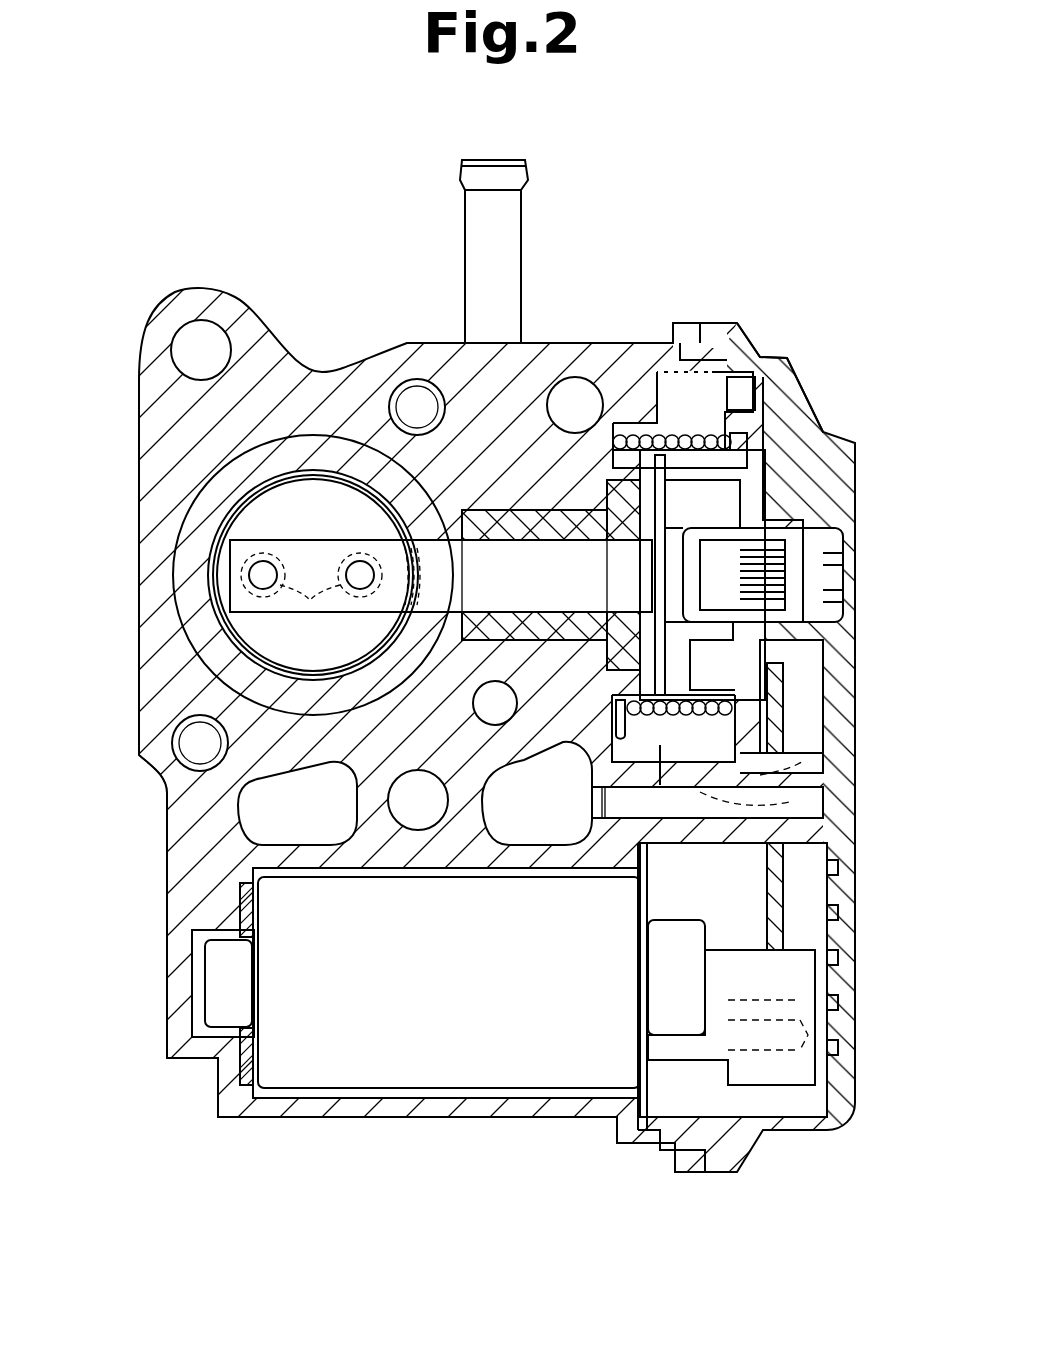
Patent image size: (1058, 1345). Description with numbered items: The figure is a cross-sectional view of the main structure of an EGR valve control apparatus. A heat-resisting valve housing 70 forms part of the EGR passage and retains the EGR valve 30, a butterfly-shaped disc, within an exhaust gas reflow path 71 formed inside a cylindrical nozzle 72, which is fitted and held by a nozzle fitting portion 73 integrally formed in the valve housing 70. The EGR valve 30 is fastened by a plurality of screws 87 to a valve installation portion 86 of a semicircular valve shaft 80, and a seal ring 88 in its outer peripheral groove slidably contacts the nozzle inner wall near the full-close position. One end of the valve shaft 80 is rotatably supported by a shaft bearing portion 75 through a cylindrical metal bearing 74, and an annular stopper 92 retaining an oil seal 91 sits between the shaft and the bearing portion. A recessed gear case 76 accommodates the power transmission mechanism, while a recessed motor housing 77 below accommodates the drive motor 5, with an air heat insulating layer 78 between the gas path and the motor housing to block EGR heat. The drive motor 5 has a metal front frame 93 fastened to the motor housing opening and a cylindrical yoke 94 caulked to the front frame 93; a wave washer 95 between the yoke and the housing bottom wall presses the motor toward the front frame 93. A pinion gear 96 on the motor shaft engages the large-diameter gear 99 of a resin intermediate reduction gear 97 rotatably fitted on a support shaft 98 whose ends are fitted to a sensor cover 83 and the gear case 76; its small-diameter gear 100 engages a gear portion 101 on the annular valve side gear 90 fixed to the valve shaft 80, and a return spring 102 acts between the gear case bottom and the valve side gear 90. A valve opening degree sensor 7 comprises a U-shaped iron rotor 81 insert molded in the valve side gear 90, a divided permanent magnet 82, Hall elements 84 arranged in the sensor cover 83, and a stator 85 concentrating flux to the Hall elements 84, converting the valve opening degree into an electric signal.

The valve housing 70 is at (320, 382).
The exhaust gas reflow path 71 is at (210, 472).
The cylindrical nozzle 72 is at (203, 528).
The nozzle fitting portion 73 is at (273, 733).
The metal bearing 74 is at (505, 548).
The shaft bearing portion 75 is at (565, 480).
The gear case 76 is at (738, 388).
The motor housing 77 is at (553, 1119).
The heat insulating layer 78 is at (320, 826).
The valve shaft 80 is at (538, 522).
The rotor 81 is at (745, 648).
The permanent magnet 82 is at (733, 630).
The sensor cover 83 is at (823, 443).
The Hall elements 84 is at (755, 540).
The stator 85 is at (723, 553).
The valve installation portion 86 is at (316, 555).
The screws 87 is at (310, 602).
The seal ring 88 is at (210, 587).
The EGR valve 30 is at (270, 632).
The valve opening degree sensor 7 is at (820, 582).
The valve side gear 90 is at (733, 737).
The oil seal 91 is at (627, 440).
The annular stopper 92 is at (668, 432).
The front frame 93 is at (648, 1132).
The yoke 94 is at (350, 1095).
The wave washer 95 is at (232, 1070).
The pinion gear 96 is at (797, 982).
The intermediate reduction gear 97 is at (783, 876).
The support shaft 98 is at (790, 812).
The large-diameter gear 99 is at (847, 937).
The small-diameter gear 100 is at (745, 768).
The gear portion 101 is at (790, 790).
The return spring 102 is at (735, 392).
The drive motor 5 is at (480, 1060).